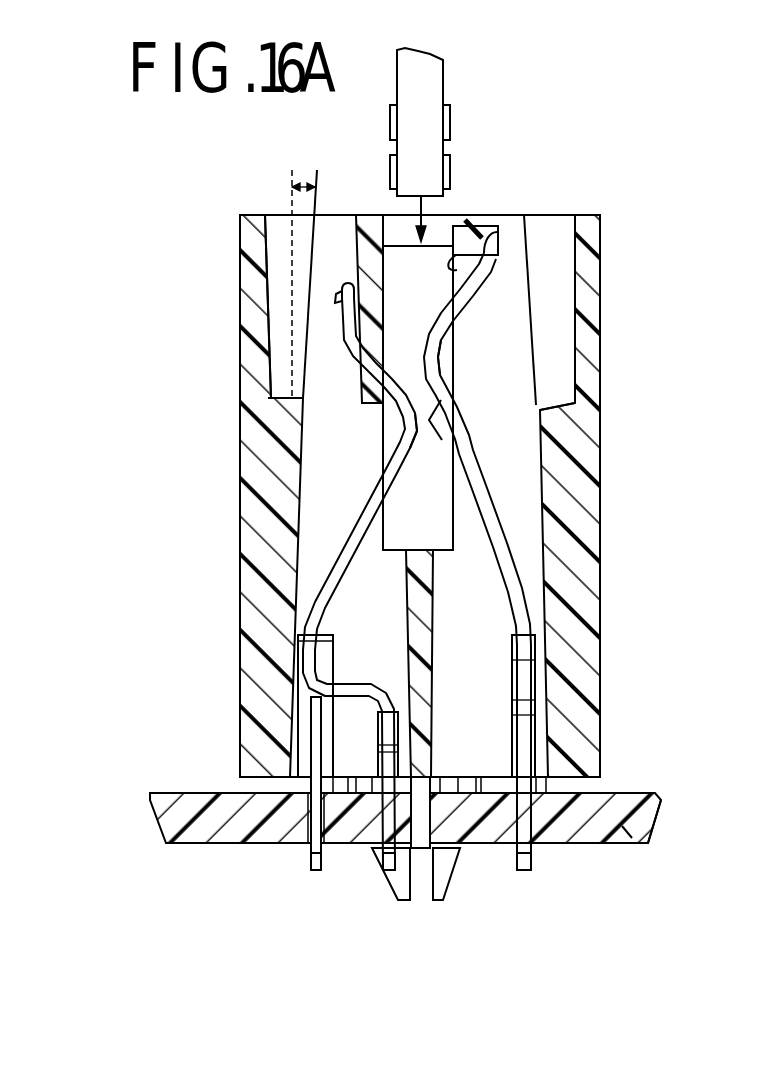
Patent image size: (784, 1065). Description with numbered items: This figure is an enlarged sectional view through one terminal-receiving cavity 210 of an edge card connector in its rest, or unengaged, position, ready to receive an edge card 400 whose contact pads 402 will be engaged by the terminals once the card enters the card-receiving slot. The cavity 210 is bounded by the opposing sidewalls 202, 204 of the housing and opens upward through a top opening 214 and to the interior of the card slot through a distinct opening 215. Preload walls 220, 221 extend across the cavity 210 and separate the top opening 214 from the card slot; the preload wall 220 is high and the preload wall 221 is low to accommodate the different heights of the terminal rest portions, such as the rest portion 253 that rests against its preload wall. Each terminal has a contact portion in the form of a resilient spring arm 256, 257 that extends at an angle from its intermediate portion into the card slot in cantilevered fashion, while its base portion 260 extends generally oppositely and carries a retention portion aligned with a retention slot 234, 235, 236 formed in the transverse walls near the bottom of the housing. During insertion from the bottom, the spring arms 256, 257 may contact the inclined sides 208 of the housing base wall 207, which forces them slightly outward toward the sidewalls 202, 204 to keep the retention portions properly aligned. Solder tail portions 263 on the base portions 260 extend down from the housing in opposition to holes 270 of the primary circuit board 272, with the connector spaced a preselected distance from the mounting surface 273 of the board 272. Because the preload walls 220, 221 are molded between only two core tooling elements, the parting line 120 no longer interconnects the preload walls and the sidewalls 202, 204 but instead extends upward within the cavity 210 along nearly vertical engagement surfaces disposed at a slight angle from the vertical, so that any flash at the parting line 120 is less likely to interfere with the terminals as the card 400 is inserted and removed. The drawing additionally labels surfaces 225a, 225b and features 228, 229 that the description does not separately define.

The edge card 400 is at (418, 98).
The contact pads 402 is at (450, 167).
The opening 215 is at (452, 218).
The preload wall 220 is at (478, 225).
The contact hook 228 is at (492, 222).
The top opening 214 is at (552, 228).
The terminal-receiving cavity 210 is at (545, 262).
The tapered surface 225a is at (283, 292).
The tapered surface 225b is at (305, 240).
The wall surface 229 is at (340, 292).
The rest portion 253 is at (345, 327).
The spring arm 256 is at (438, 352).
The spring arm 257 is at (408, 432).
The parting line 120 is at (300, 394).
The preload wall 221 is at (365, 240).
The sidewall 202 is at (595, 468).
The sidewall 204 is at (260, 495).
The housing base wall 207 is at (425, 635).
The inclined sides 208 is at (432, 735).
The base portion 260 is at (545, 688).
The retention slot 234 is at (540, 755).
The retention slot 236 is at (303, 748).
The retention slot 235 is at (383, 745).
The solder tail portion 263 is at (311, 877).
The holes 270 is at (306, 836).
The mounting surface 273 is at (655, 792).
The primary circuit board 272 is at (625, 835).